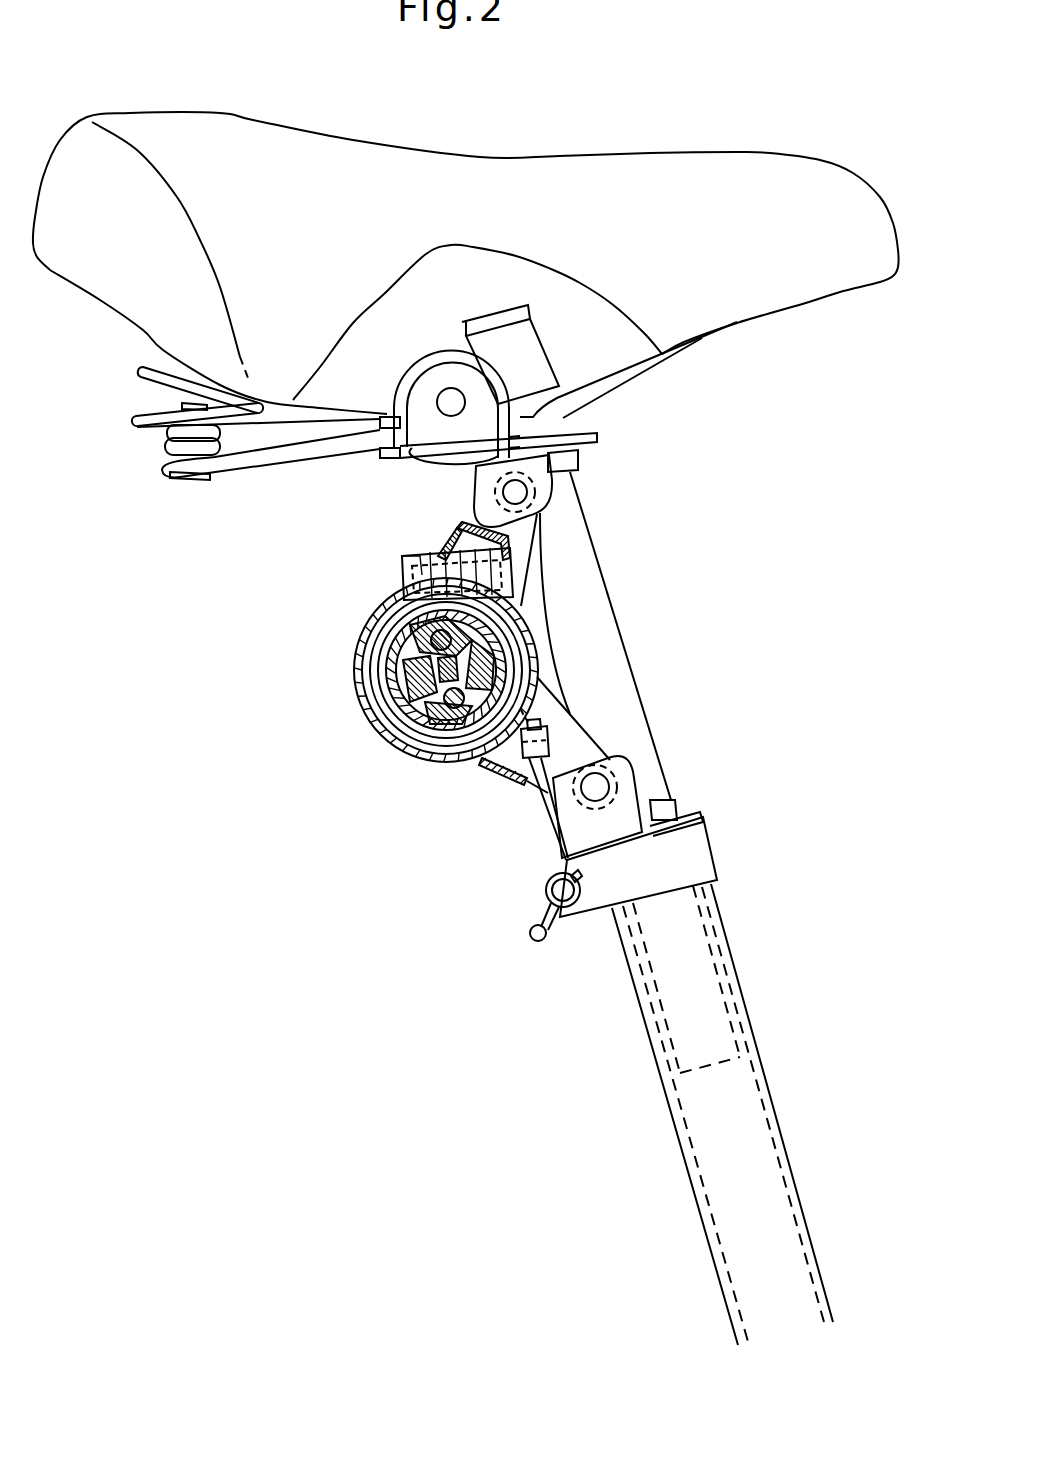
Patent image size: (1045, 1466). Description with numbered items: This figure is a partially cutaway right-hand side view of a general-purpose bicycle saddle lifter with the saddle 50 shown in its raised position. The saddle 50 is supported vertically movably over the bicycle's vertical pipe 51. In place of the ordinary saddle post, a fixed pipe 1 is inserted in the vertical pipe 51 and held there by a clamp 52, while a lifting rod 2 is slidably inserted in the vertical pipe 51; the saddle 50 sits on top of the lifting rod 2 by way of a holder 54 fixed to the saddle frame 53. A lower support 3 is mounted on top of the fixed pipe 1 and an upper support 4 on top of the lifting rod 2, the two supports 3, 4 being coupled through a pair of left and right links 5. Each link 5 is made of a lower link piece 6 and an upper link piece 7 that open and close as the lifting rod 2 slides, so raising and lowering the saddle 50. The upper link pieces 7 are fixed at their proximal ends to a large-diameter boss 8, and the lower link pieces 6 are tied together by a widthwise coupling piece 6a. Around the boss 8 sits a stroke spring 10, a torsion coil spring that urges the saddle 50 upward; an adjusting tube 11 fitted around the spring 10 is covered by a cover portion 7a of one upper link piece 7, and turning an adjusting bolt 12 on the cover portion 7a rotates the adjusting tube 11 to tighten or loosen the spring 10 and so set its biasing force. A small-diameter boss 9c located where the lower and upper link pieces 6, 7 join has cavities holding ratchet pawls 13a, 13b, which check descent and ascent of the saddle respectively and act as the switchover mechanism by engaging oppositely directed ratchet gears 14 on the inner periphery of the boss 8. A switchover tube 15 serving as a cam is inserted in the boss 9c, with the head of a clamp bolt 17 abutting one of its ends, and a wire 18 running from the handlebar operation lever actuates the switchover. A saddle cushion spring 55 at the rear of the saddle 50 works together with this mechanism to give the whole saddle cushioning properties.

The fixed pipe 1 is at (750, 1178).
The lifting rod 2 is at (600, 638).
The lower support 3 is at (628, 777).
The upper support 4 is at (550, 490).
The link 5 is at (352, 638).
The lower link piece 6 is at (526, 786).
The coupling piece 6a is at (500, 770).
The upper link piece 7 is at (474, 520).
The cover portion 7a is at (374, 625).
The large-diameter boss 8 is at (498, 642).
The small-diameter boss 9c is at (405, 680).
The stroke spring 10 is at (410, 727).
The adjusting tube 11 is at (520, 616).
The adjusting bolt 12 is at (438, 564).
The ratchet pawl 13a is at (412, 632).
The ratchet pawl 13b is at (444, 708).
The ratchet gear 14 is at (400, 630).
The switchover tube 15 is at (400, 700).
The clamp bolt 17 is at (470, 668).
The wire 18 is at (549, 818).
The saddle 50 is at (471, 178).
The vertical pipe 51 is at (698, 1134).
The clamp 52 is at (545, 889).
The saddle frame 53 is at (257, 470).
The holder 54 is at (452, 371).
The saddle cushion spring 55 is at (146, 372).